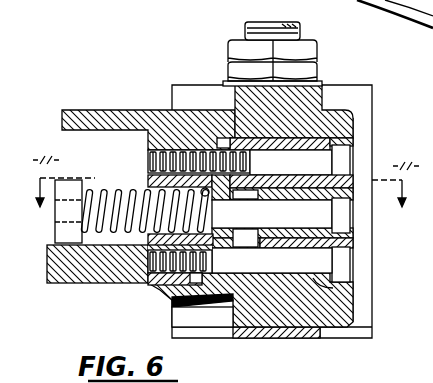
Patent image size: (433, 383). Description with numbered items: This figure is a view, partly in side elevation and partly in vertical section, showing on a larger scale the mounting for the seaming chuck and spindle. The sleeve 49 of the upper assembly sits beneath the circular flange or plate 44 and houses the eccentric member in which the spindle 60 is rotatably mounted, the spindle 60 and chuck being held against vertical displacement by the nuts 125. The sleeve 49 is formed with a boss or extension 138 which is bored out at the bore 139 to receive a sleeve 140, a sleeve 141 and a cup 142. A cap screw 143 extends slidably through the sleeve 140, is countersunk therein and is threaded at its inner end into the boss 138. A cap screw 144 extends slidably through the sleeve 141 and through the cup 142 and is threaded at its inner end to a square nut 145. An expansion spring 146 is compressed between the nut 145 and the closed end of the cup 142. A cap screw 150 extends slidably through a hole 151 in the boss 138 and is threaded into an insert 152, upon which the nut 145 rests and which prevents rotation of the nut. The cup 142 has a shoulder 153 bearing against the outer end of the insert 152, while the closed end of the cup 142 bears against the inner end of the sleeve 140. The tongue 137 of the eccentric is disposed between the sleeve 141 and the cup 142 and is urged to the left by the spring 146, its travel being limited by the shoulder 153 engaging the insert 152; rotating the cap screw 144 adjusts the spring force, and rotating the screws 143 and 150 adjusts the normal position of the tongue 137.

The circular flange or plate 44 is at (102, 92).
The sleeve 49 is at (172, 95).
The spindle 60 is at (300, 36).
The nuts 125 is at (317, 72).
The tongue 137 is at (232, 258).
The boss or extension 138 is at (325, 115).
The bore 139 is at (323, 143).
The sleeve 140 is at (235, 143).
The sleeve 141 is at (343, 242).
The cup 142 is at (147, 163).
The cap screw 143 is at (345, 163).
The cap screw 144 is at (345, 223).
The square nut 145 is at (55, 236).
The expansion spring 146 is at (147, 182).
The cap screw 150 is at (345, 275).
The hole 151 is at (333, 290).
The insert 152 is at (88, 281).
The shoulder 153 is at (195, 248).